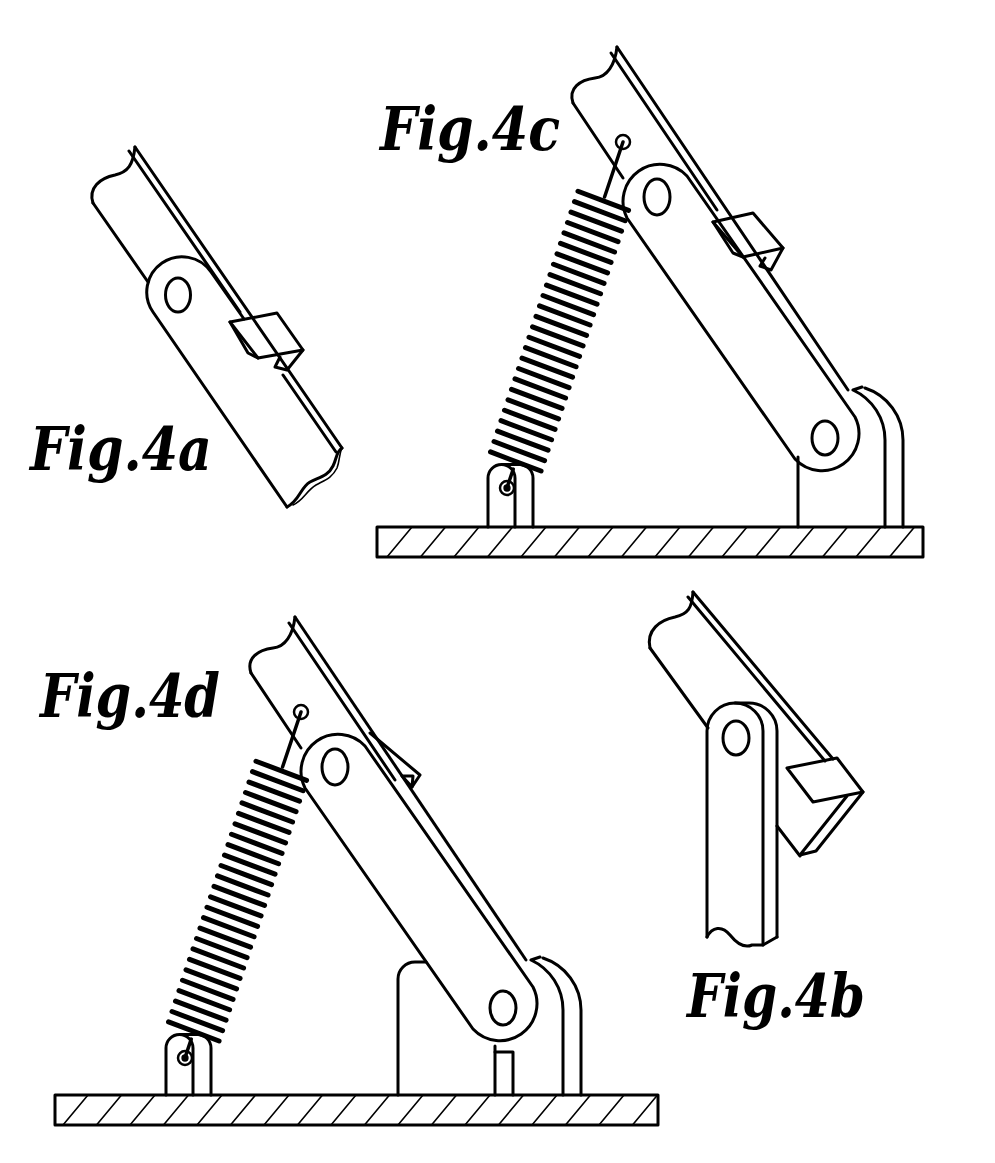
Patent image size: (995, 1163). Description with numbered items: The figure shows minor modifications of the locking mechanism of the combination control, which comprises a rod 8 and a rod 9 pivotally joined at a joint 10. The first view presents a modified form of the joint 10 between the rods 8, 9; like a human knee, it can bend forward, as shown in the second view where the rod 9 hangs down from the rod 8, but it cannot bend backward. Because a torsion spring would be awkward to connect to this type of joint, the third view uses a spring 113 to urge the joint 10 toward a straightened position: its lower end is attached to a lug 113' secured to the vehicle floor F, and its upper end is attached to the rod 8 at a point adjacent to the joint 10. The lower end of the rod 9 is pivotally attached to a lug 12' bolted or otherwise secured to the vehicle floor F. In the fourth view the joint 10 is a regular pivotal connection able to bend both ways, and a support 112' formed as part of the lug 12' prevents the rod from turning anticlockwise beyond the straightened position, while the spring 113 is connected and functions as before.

In FIG. 4a, the rod 8 is at (128, 216).
In FIG. 4c, the rod 8 is at (607, 118).
In FIG. 4b, the rod 8 is at (680, 655).
In FIG. 4d, the rod 8 is at (285, 688).
In FIG. 4a, the rod 9 is at (278, 457).
In FIG. 4c, the rod 9 is at (758, 357).
In FIG. 4b, the rod 9 is at (733, 872).
In FIG. 4d, the rod 9 is at (440, 925).
In FIG. 4a, the joint 10 is at (247, 260).
In FIG. 4c, the joint 10 is at (727, 162).
In FIG. 4b, the joint 10 is at (798, 687).
In FIG. 4d, the joint 10 is at (415, 740).
In FIG. 4c, the spring 113 is at (536, 314).
In FIG. 4d, the spring 113 is at (213, 884).
In FIG. 4c, the lug 113' is at (454, 491).
In FIG. 4d, the lug 113' is at (132, 1060).
In FIG. 4d, the lug 12' is at (566, 1010).
In FIG. 4d, the support 112' is at (397, 1028).
In FIG. 4c, the vehicle floor F is at (617, 542).
In FIG. 4d, the vehicle floor F is at (620, 1093).